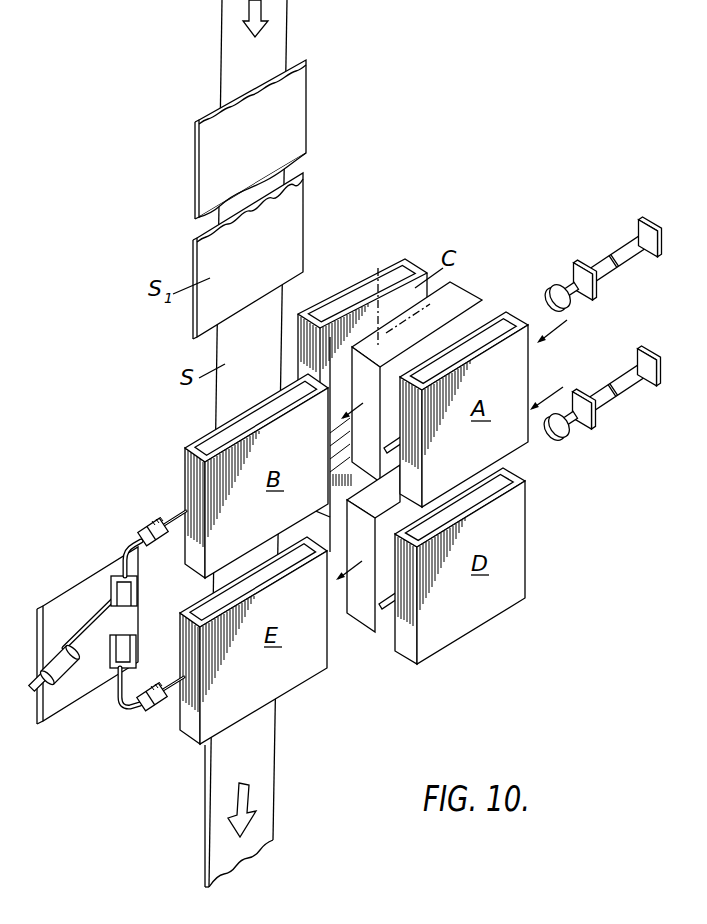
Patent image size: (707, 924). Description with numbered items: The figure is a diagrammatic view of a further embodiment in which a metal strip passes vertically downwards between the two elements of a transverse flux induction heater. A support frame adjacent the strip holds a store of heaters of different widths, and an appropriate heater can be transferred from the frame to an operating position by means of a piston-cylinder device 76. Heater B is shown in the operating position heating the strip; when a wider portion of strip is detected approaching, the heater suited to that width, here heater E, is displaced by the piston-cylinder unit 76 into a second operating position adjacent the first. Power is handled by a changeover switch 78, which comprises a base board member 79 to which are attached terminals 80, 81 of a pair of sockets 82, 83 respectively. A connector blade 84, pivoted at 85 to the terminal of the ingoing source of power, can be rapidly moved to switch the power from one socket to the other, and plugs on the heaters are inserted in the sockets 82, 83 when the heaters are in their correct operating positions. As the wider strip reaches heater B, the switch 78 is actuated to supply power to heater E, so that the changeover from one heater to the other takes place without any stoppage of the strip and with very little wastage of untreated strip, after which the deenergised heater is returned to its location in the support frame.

The piston-cylinder device 76 is at (603, 253).
The changeover switch 78 is at (107, 628).
The base board member 79 is at (88, 595).
The terminal 80 is at (139, 595).
The terminal 81 is at (132, 656).
The socket 82 is at (144, 521).
The socket 83 is at (161, 712).
The connector blade 84 is at (93, 628).
The pivot 85 is at (78, 662).